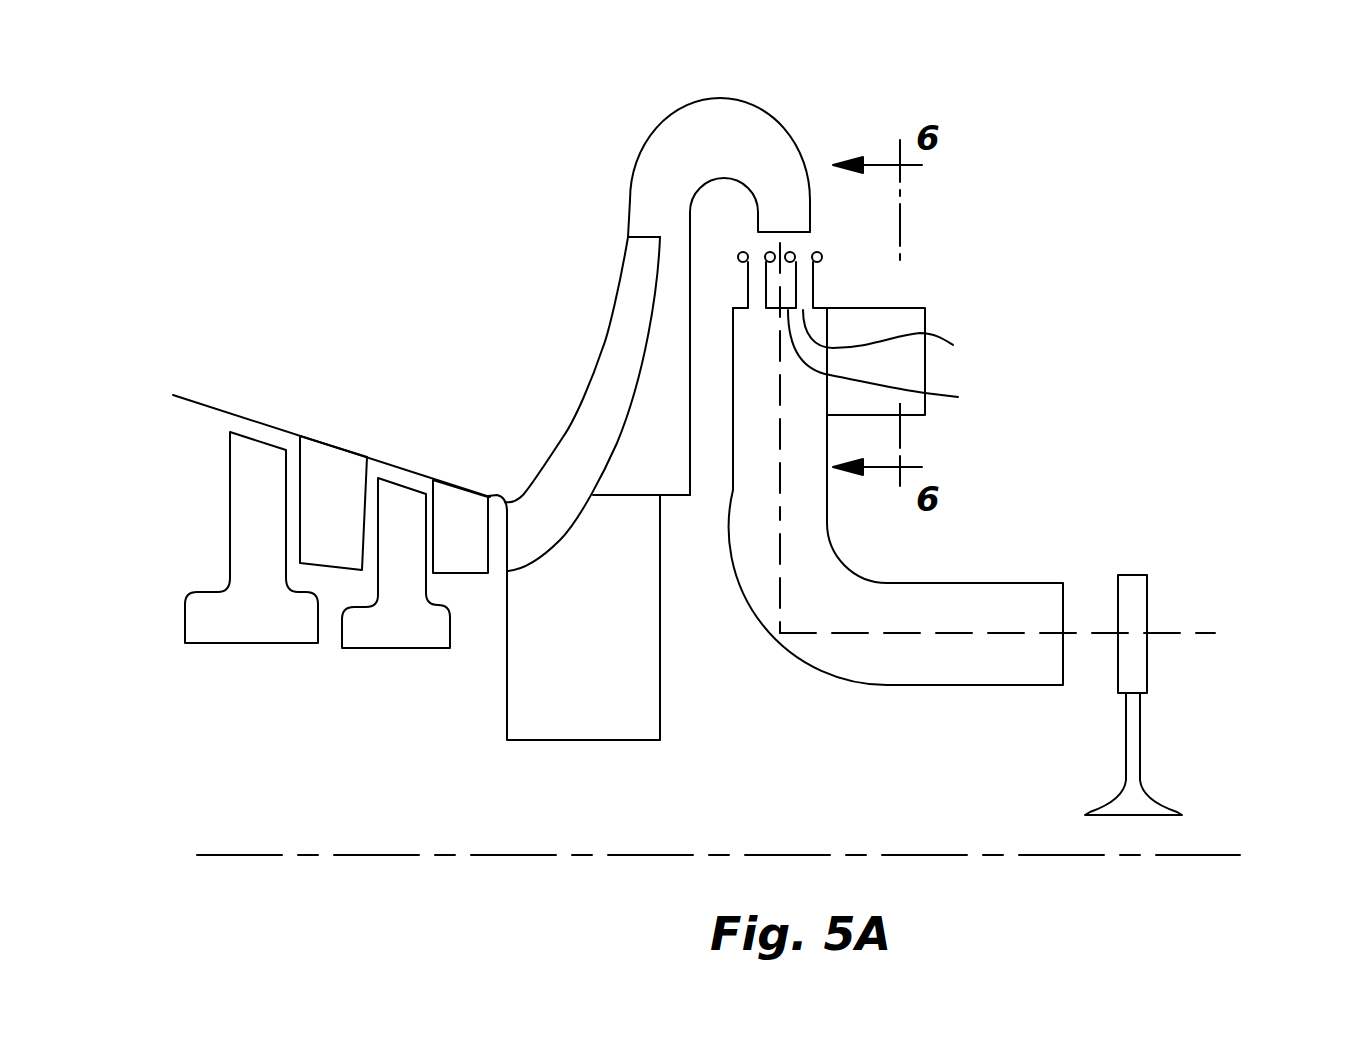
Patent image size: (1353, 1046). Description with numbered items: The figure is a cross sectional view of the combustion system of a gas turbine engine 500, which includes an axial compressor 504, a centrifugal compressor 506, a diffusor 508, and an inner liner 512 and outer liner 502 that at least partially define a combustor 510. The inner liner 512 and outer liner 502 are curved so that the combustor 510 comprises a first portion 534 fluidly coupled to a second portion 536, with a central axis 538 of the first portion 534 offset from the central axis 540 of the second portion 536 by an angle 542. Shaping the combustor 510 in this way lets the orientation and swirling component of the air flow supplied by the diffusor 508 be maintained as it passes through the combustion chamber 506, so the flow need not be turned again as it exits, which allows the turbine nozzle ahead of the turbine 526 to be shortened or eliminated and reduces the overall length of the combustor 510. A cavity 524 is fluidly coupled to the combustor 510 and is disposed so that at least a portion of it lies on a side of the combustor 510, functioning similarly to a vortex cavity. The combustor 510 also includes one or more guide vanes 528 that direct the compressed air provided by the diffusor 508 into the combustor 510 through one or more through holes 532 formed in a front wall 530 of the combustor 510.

The gas turbine engine 500 is at (1110, 120).
The outer liner 502 is at (957, 583).
The axial compressor 504 is at (262, 424).
The centrifugal compressor 506 is at (601, 347).
The diffusor 508 is at (667, 116).
The combustor 510 is at (968, 617).
The inner liner 512 is at (733, 493).
The cavity 524 is at (877, 308).
The turbine 526 is at (1147, 600).
The guide vanes 528 is at (815, 272).
The front wall 530 is at (893, 359).
The through holes 532 is at (898, 338).
The first portion 534 is at (910, 435).
The second portion 536 is at (938, 702).
The central axis of the first portion 538 is at (780, 510).
The central axis of the second portion 540 is at (1207, 633).
The angle 542 is at (845, 620).